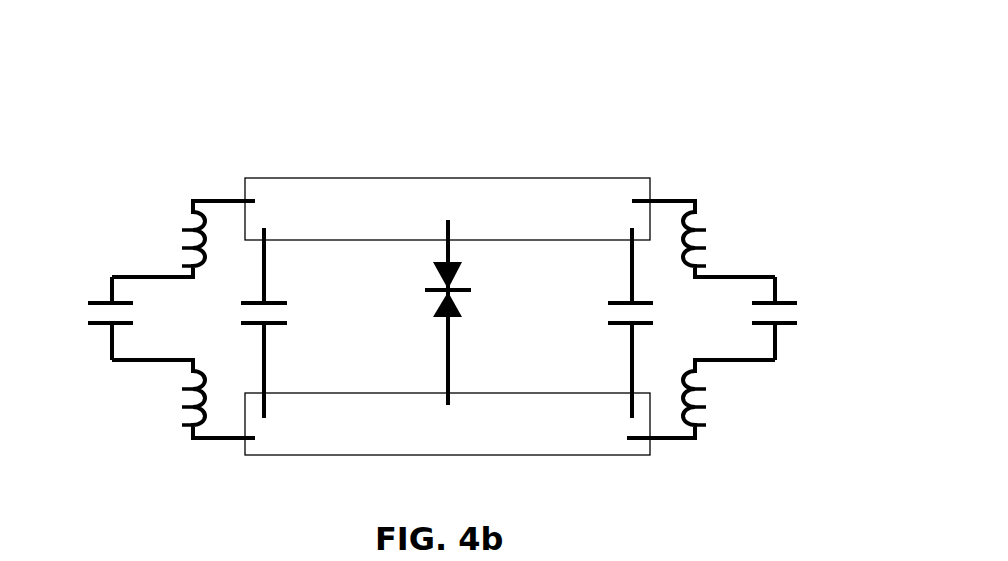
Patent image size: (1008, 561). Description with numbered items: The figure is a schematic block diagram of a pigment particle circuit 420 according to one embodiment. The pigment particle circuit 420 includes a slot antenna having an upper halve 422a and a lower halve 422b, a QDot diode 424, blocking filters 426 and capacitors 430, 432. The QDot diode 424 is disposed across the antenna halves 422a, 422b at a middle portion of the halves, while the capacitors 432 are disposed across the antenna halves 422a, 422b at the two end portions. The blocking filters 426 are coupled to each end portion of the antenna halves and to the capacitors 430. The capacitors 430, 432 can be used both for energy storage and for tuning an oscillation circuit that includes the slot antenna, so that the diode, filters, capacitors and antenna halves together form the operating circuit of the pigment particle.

The pigment particle circuit 420 is at (684, 87).
The upper halve of slot antenna 422a is at (615, 177).
The lower halve of slot antenna 422b is at (545, 457).
The QDot diode 424 is at (452, 318).
The blocking filter 426 is at (183, 228).
The capacitor 430 is at (90, 300).
The capacitor 432 is at (285, 300).